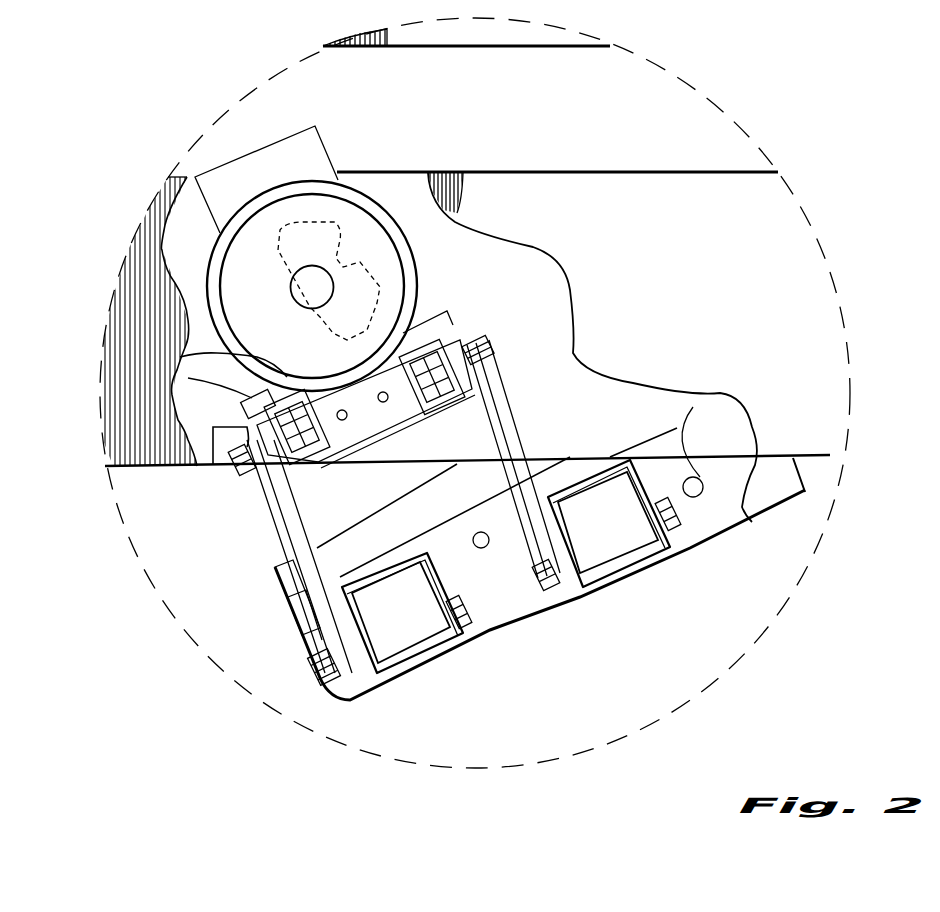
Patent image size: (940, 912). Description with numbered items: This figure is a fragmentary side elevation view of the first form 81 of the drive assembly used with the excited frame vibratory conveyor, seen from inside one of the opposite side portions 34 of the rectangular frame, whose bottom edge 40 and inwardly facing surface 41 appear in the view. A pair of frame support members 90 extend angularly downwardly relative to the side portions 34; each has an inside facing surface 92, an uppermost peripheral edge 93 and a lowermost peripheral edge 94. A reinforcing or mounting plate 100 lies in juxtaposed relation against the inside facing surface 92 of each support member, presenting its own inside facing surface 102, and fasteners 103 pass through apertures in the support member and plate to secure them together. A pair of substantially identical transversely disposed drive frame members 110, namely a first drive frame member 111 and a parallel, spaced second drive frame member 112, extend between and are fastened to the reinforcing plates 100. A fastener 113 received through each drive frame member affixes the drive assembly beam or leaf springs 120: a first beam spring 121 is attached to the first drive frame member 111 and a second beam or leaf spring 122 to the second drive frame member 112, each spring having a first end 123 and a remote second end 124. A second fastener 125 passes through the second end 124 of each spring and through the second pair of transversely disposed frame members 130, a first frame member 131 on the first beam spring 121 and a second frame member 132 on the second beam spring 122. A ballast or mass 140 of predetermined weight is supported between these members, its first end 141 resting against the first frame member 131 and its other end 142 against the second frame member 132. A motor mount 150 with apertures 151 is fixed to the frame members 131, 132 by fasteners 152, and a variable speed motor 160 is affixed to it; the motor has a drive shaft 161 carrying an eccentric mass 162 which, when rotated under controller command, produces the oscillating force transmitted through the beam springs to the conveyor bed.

The side portions 34 is at (820, 275).
The bottom edge 40 is at (812, 457).
The inwardly facing surface 41 is at (787, 223).
The first form of the drive assembly 81 is at (547, 277).
The frame support members 90 is at (290, 622).
The inside facing surface 92 is at (443, 517).
The uppermost peripheral edge 93 is at (357, 518).
The lowermost peripheral edge 94 is at (763, 513).
The reinforcing or mounting plates 100 is at (720, 540).
The inside facing surface 102 is at (677, 430).
The fasteners 103 is at (698, 478).
The transversely disposed drive frame members 110 is at (450, 655).
The first drive frame member 111 is at (381, 674).
The second drive frame member 112 is at (630, 580).
The fastener 113 is at (637, 537).
The drive assembly beam or leaf springs 120 is at (258, 572).
The first beam spring 121 is at (262, 567).
The second beam or leaf spring 122 is at (510, 458).
The first end 123 is at (350, 687).
The second end 124 is at (217, 470).
The second fastener 125 is at (247, 487).
The second pair of transversely disposed frame members 130 is at (450, 410).
The first frame member 131 is at (262, 353).
The second frame member 132 is at (440, 328).
The ballast or mass 140 is at (415, 325).
The first end 141 is at (327, 397).
The block edge 142 is at (436, 414).
The motor mount 150 is at (245, 408).
The apertures 151 is at (140, 380).
The fastener 152 is at (303, 470).
The variable speed motor 160 is at (237, 273).
The drive shaft 161 is at (310, 290).
The eccentric mass 162 is at (331, 281).